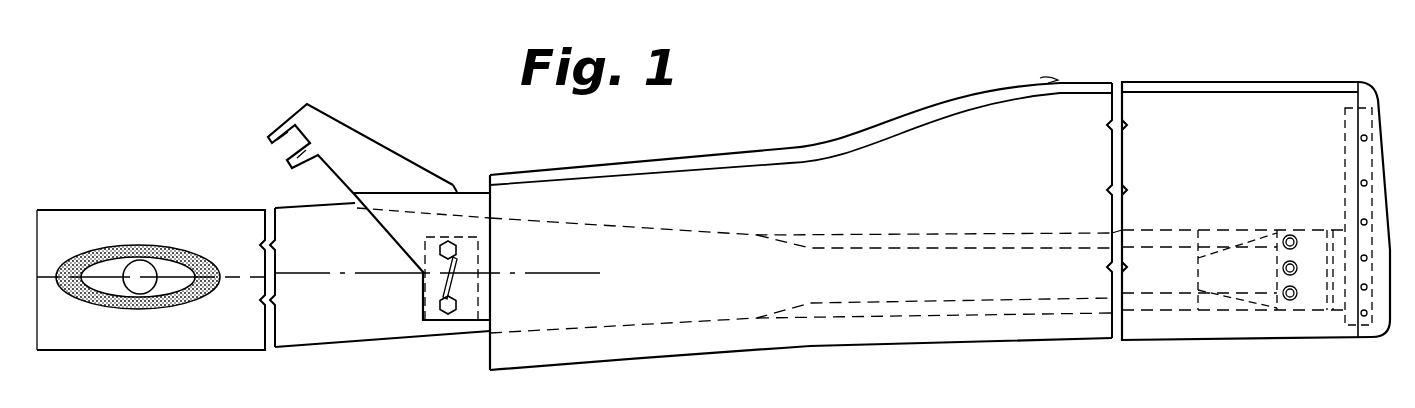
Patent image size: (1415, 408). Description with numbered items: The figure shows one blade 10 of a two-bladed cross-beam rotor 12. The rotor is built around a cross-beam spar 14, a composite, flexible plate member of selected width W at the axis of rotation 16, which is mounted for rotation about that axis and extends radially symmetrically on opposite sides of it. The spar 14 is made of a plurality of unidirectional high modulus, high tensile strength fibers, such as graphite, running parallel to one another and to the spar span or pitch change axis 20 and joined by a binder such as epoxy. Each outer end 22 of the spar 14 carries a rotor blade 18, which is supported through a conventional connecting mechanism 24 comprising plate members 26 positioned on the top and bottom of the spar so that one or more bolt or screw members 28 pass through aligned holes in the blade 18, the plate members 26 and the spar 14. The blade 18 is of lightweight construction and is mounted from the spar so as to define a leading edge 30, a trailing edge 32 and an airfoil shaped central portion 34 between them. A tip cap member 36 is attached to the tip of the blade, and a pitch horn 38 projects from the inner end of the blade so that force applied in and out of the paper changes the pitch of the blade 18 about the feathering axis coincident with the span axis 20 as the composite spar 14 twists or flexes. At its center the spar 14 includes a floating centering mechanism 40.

The blade 10 is at (735, 146).
The cross-beam rotor 12 is at (487, 170).
The cross-beam spar 14 is at (234, 330).
The axis of rotation 16 is at (143, 272).
The rotor blade 18 is at (965, 125).
The spar span or pitch change axis 20 is at (364, 266).
The outer end of spar 22 is at (1310, 255).
The connecting mechanism 24 is at (1290, 230).
The plate member 26 is at (1213, 265).
The bolt or screw member 28 is at (1290, 300).
The leading edge 30 is at (942, 342).
The trailing edge 32 is at (1043, 83).
The airfoil shaped central portion 34 is at (1024, 196).
The tip cap member 36 is at (1380, 170).
The pitch horn 38 is at (365, 153).
The floating centering mechanism 40 is at (110, 240).
The width of spar W is at (53, 388).